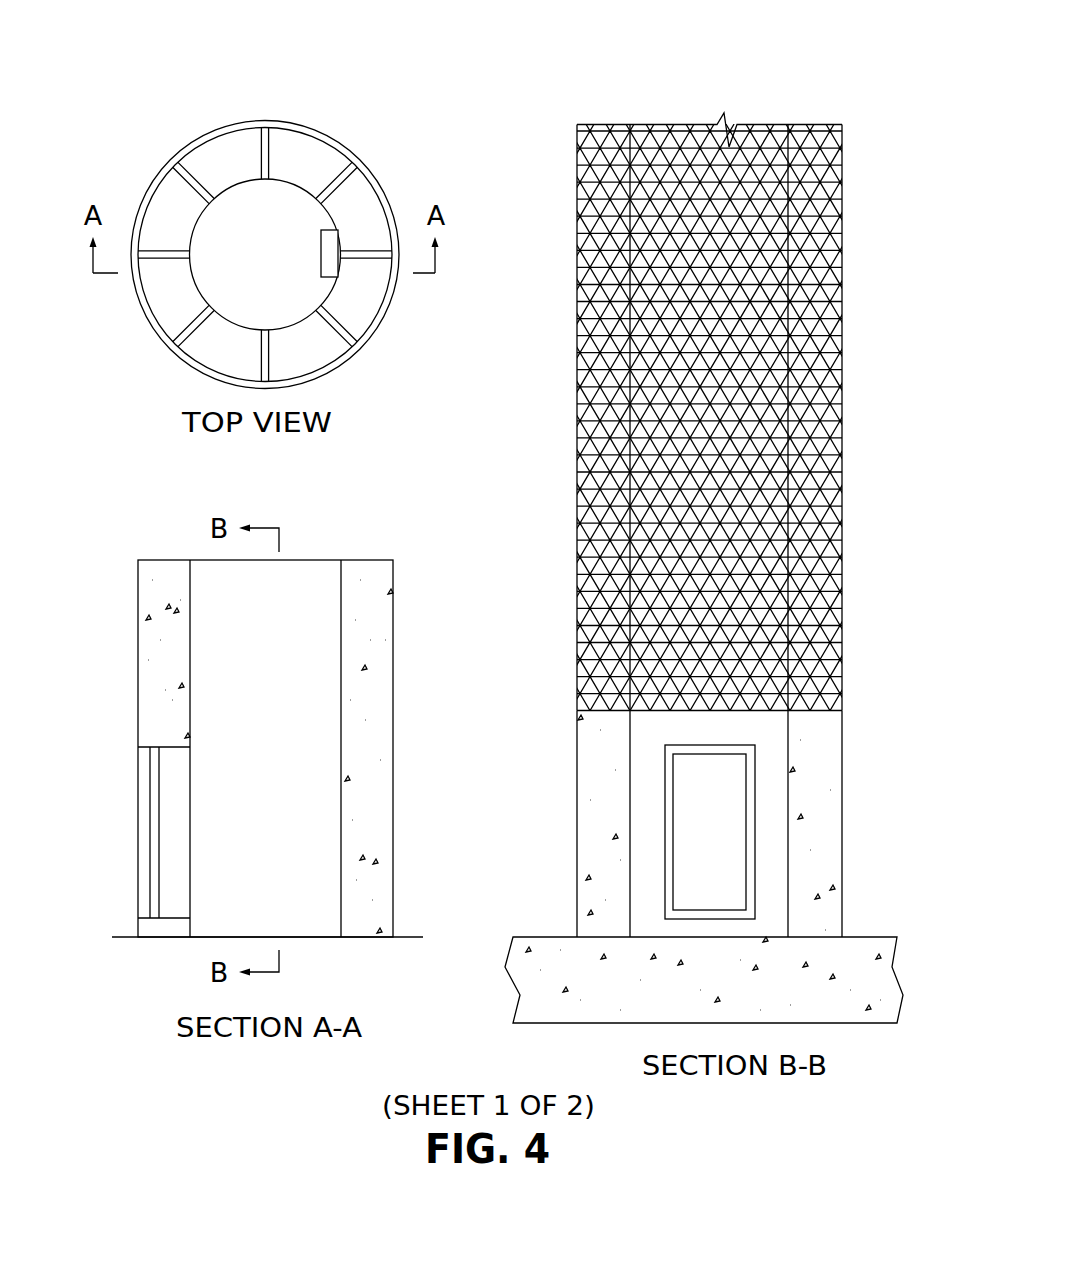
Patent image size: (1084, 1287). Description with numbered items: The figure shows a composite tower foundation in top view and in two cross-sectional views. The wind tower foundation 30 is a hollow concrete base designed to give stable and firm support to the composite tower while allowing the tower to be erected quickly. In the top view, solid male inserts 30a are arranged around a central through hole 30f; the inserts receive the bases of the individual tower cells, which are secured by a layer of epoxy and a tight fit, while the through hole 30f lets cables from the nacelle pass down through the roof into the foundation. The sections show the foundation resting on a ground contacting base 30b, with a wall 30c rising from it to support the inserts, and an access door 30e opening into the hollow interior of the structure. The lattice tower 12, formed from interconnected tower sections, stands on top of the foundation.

The wind tower foundation 30 is at (265, 203).
The solid male inserts 30a is at (160, 207).
The through hole 30f is at (284, 207).
The tower 12 is at (763, 124).
The wall 30c is at (842, 833).
The access door 30e is at (735, 846).
The ground contacting base 30b is at (552, 952).